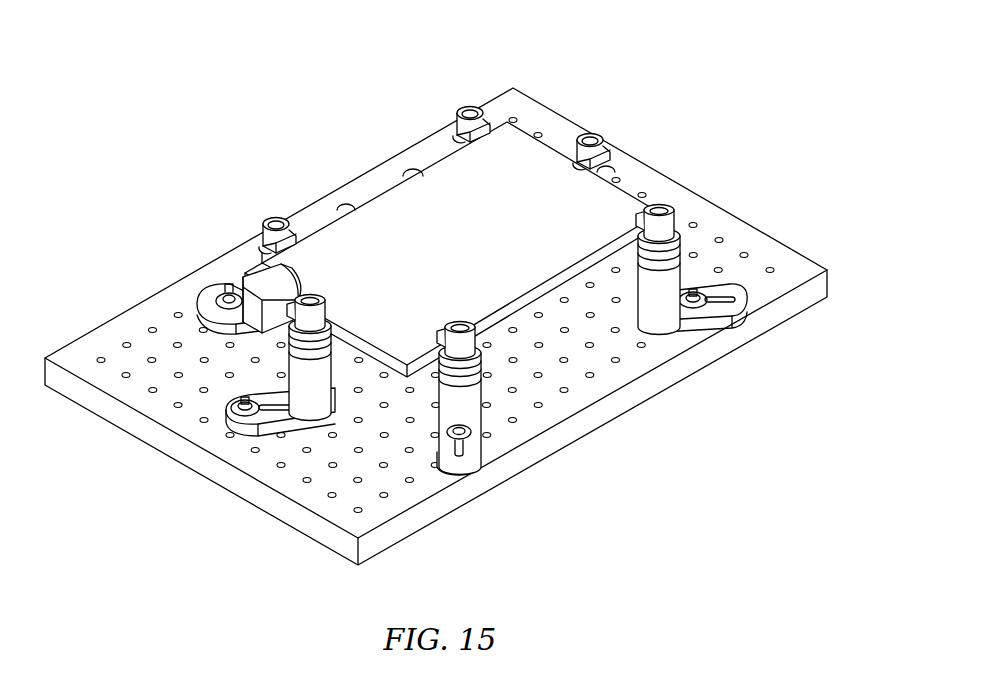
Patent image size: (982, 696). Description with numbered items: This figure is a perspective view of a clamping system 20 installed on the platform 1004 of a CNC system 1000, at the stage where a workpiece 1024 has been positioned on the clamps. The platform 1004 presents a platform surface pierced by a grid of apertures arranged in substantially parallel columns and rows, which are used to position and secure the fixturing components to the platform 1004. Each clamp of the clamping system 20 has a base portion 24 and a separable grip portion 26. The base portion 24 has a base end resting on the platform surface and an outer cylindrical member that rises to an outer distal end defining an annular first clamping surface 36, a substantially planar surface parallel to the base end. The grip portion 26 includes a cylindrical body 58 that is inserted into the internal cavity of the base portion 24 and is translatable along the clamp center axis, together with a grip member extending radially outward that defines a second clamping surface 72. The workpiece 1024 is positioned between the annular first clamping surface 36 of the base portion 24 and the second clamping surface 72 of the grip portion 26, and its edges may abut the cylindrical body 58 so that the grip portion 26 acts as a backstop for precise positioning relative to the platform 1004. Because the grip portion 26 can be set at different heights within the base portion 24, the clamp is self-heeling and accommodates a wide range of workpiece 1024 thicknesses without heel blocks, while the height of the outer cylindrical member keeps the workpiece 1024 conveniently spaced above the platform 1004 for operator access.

The CNC system 1000 is at (441, 282).
The platform 1004 is at (657, 168).
The clamping system 20 is at (470, 238).
The workpiece 1024 is at (397, 208).
The base portion 24 is at (295, 375).
The grip portion 26 is at (297, 294).
The annular first clamping surface 36 is at (332, 318).
The cylindrical body 58 is at (229, 289).
The second clamping surface 72 is at (333, 316).